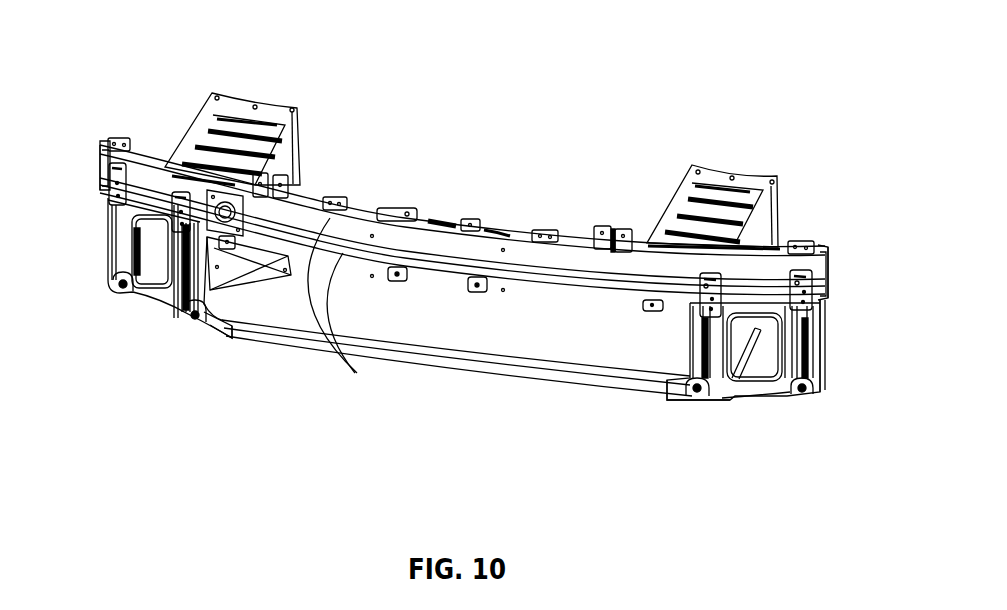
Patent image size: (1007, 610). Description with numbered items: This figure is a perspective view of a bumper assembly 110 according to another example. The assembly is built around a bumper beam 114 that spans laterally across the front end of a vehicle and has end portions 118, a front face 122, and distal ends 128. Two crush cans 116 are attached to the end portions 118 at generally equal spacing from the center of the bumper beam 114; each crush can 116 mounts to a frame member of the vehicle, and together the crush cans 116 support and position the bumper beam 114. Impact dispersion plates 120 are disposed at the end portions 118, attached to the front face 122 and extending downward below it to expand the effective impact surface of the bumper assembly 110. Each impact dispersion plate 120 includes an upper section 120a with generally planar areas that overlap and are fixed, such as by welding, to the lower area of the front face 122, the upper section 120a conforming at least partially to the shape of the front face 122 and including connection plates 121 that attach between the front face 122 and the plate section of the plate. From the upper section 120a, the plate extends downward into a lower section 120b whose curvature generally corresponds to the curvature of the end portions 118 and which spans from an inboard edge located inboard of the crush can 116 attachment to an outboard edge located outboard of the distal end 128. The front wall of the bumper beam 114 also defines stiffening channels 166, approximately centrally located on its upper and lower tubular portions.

The bumper assembly 110 is at (128, 78).
The bumper beam 114 is at (531, 229).
The crush cans 116 is at (267, 100).
The end portions 118 is at (100, 143).
The impact dispersion plates 120 is at (135, 300).
The upper section 120a is at (827, 325).
The lower sections 120b is at (224, 339).
The connection plates 121 is at (107, 192).
The front face 122 is at (358, 237).
The distal ends 128 is at (100, 173).
The stiffening channels 166 is at (350, 307).